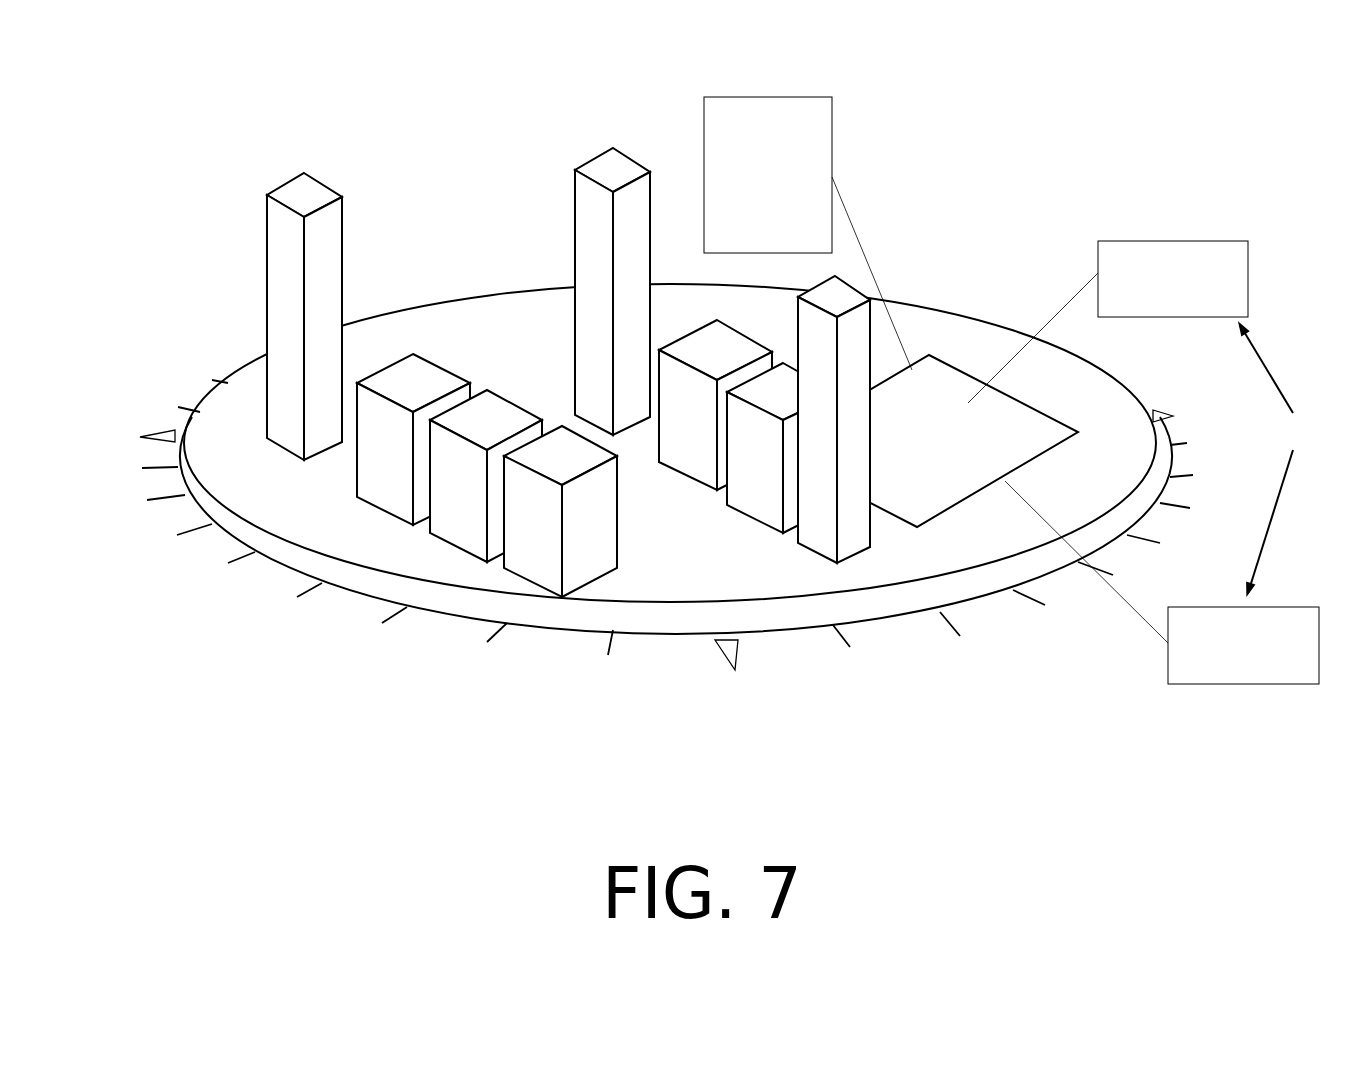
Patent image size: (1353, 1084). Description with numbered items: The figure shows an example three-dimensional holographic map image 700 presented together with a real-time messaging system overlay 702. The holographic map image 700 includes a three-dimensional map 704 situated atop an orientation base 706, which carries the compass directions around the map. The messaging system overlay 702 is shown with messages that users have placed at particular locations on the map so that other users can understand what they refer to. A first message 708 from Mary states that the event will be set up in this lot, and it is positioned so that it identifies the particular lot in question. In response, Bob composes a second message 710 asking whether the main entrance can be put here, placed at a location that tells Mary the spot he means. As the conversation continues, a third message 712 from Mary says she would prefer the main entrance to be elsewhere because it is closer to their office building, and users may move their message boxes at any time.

The 3-D holographic map image 700 is at (205, 155).
The messaging system overlay 702 is at (1279, 459).
The 3-D map 704 is at (503, 287).
The orientation base 706 is at (295, 573).
The first message 708 is at (1137, 301).
The second message 710 is at (1162, 602).
The third message 712 is at (820, 223).